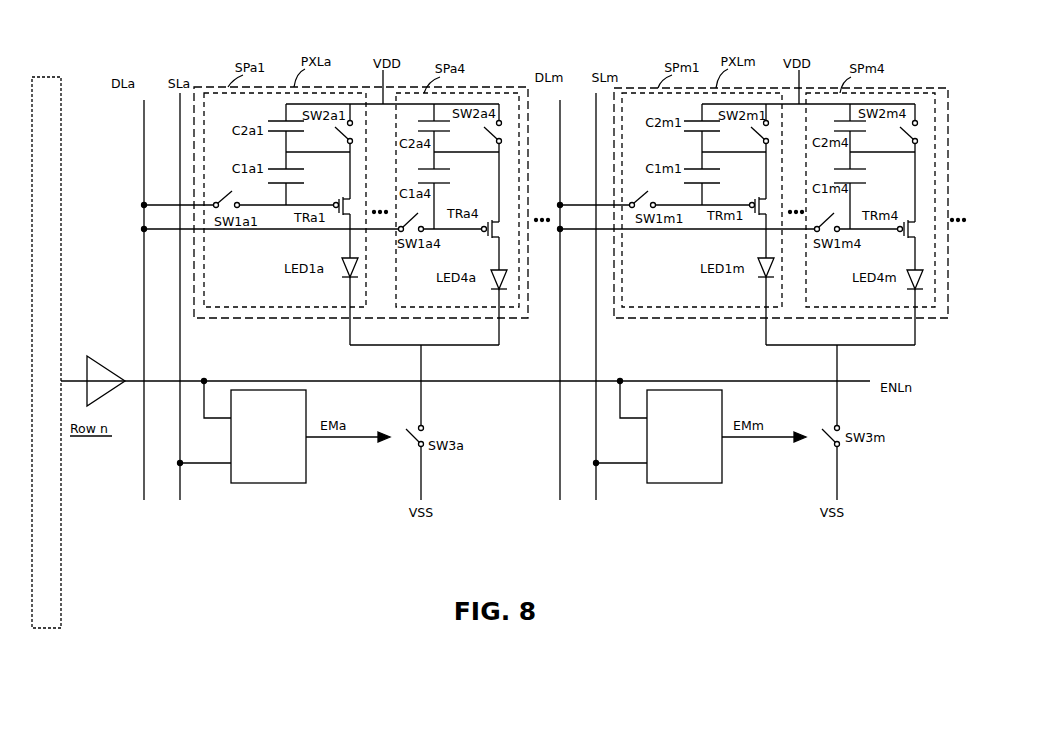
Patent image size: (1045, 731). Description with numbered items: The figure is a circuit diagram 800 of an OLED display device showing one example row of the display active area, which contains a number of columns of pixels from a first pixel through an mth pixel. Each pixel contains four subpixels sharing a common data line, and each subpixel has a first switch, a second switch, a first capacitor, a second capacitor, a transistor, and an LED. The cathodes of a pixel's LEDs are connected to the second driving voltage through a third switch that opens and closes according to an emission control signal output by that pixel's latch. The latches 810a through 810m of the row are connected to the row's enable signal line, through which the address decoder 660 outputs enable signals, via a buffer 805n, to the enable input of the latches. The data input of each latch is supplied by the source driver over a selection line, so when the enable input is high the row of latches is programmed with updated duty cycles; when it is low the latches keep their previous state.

The circuit diagram 800 is at (920, 36).
The address decoder 660 is at (36, 77).
The buffer 805n is at (101, 360).
The latch 810a is at (247, 390).
The latch 810m is at (663, 390).